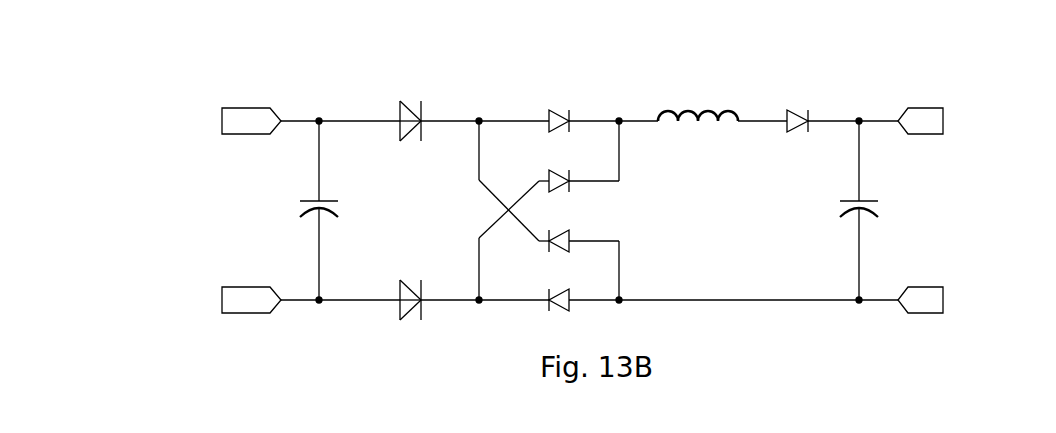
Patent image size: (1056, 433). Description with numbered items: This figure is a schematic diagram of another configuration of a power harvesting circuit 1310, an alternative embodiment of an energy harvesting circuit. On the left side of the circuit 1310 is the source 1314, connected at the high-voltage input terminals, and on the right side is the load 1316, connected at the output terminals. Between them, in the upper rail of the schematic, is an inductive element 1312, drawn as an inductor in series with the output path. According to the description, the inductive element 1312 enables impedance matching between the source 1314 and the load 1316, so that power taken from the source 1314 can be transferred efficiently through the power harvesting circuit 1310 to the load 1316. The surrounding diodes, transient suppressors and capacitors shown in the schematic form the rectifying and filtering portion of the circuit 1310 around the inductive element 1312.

The power harvesting circuit 1310 is at (210, 49).
The inductive element 1312 is at (698, 113).
The source 1314 is at (292, 210).
The load 1316 is at (925, 210).